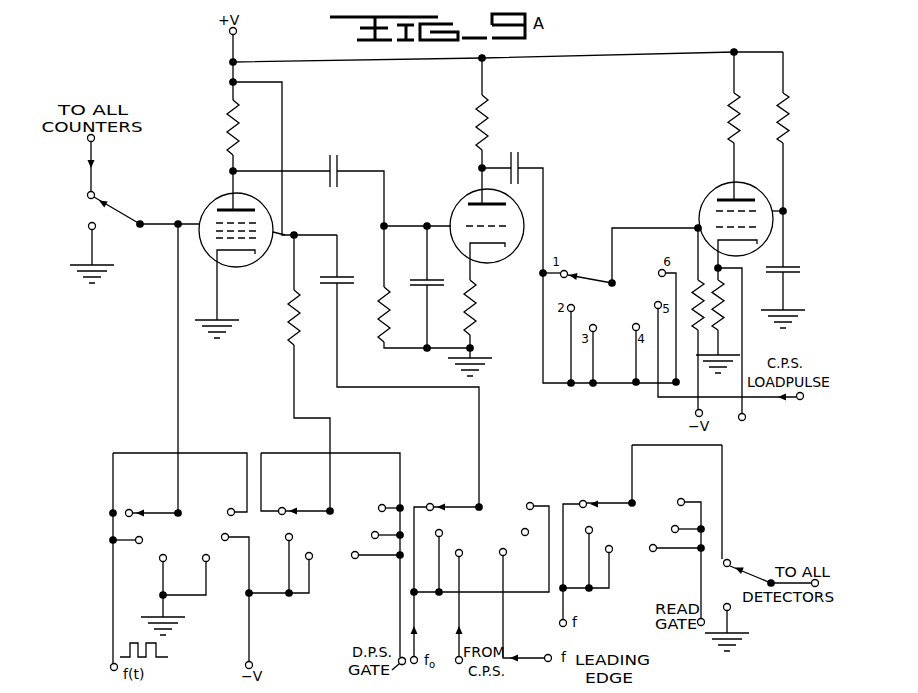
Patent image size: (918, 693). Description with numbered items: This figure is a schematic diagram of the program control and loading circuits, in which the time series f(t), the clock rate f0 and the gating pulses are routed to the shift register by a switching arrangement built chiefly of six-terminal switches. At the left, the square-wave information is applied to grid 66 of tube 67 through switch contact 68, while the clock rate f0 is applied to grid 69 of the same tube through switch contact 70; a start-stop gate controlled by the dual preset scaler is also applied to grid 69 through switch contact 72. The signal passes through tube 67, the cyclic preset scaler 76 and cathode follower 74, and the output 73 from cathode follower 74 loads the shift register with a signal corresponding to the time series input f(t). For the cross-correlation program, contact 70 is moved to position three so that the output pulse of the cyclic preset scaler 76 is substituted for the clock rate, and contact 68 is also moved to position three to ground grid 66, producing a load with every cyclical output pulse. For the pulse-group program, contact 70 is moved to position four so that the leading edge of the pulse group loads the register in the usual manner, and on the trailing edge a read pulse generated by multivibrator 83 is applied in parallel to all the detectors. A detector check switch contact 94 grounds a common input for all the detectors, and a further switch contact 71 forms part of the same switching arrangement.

The grid 66 is at (190, 227).
The tube 67 is at (219, 198).
The switch contact 68 is at (152, 512).
The grid 69 is at (279, 238).
The switch contact 70 is at (450, 506).
The switch 71 is at (600, 502).
The switch contact 72 is at (302, 510).
The output 73 is at (746, 418).
The cathode follower 74 is at (718, 188).
The cyclic preset scaler 76 is at (472, 193).
The multivibrator 83 is at (399, 664).
The switch contact 94 is at (752, 575).